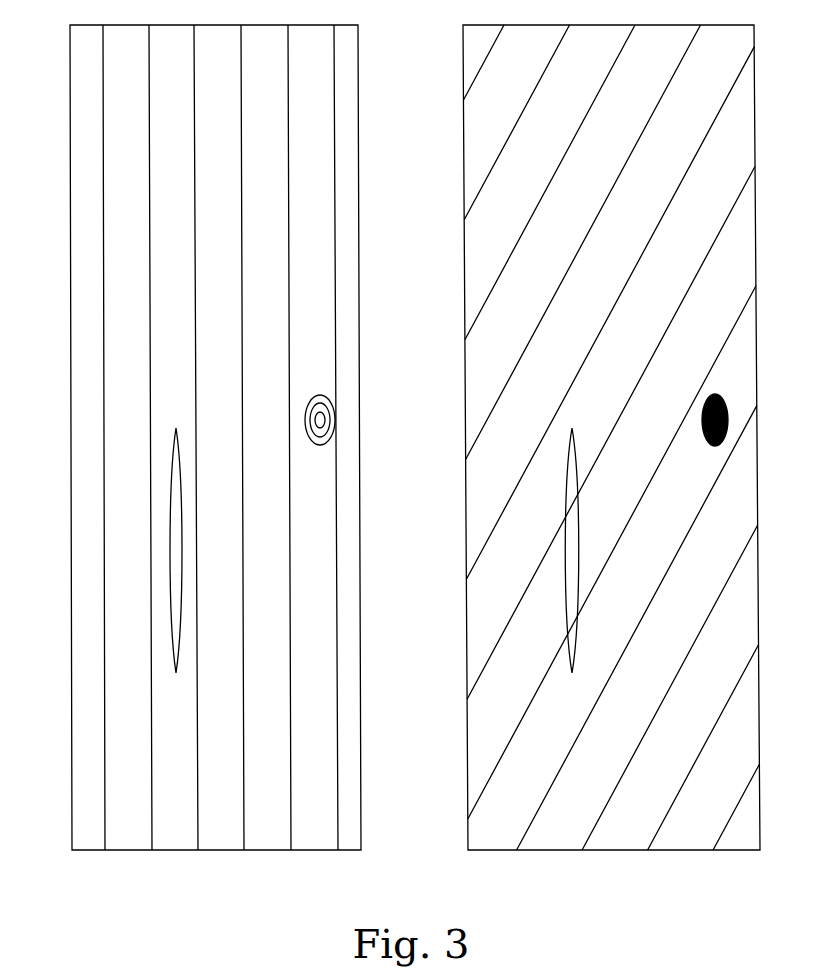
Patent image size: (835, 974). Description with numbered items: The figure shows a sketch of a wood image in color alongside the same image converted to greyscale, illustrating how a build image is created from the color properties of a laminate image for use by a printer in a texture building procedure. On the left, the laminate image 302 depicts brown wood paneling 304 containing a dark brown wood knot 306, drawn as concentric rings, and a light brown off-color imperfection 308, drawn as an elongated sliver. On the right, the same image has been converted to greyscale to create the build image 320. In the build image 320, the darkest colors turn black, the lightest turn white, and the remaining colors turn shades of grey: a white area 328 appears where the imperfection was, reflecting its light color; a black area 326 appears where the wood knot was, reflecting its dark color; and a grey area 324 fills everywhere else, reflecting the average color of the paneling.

The laminate image 302 is at (80, 864).
The wood paneling 304 is at (82, 415).
The wood knot 306 is at (325, 415).
The off-color imperfection 308 is at (177, 562).
The build image 320 is at (476, 864).
The grey area 324 is at (480, 132).
The black area 326 is at (728, 410).
The white area 328 is at (573, 562).